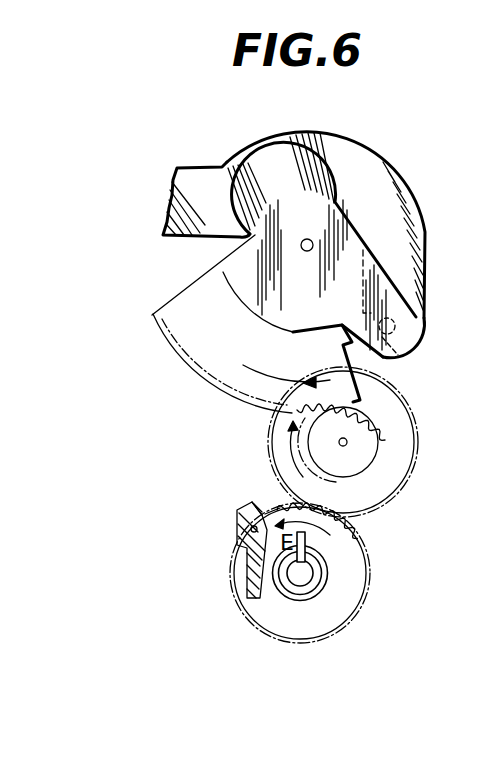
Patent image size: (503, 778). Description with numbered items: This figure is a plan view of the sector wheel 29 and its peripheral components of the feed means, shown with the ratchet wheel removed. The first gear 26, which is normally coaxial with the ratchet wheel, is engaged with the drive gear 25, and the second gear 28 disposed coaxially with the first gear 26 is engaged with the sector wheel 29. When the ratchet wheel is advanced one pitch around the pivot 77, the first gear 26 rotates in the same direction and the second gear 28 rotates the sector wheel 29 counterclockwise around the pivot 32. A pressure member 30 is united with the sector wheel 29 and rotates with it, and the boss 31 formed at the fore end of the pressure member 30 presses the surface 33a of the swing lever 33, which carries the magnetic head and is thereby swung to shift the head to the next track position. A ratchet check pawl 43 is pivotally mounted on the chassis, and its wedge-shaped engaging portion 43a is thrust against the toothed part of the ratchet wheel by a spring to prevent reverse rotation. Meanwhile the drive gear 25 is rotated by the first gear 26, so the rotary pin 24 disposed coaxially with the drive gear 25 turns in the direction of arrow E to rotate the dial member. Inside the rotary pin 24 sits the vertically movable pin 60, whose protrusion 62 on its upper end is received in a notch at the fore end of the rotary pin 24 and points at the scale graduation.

The swing lever 33 is at (377, 155).
The pivot 32 is at (315, 247).
The sector wheel 29 is at (196, 289).
The surface of the swing lever 33a is at (397, 325).
The pressure member 30 is at (410, 342).
The boss 31 is at (398, 355).
The second gear 28 is at (365, 413).
The first gear 26 is at (413, 448).
The pivot 77 is at (347, 446).
The ratchet check pawl 43 is at (237, 541).
The engaging portion 43a is at (252, 501).
The drive gear 25 is at (323, 643).
The rotary pin 24 is at (312, 587).
The vertically movable pin 60 is at (307, 573).
The protrusion 62 is at (306, 542).